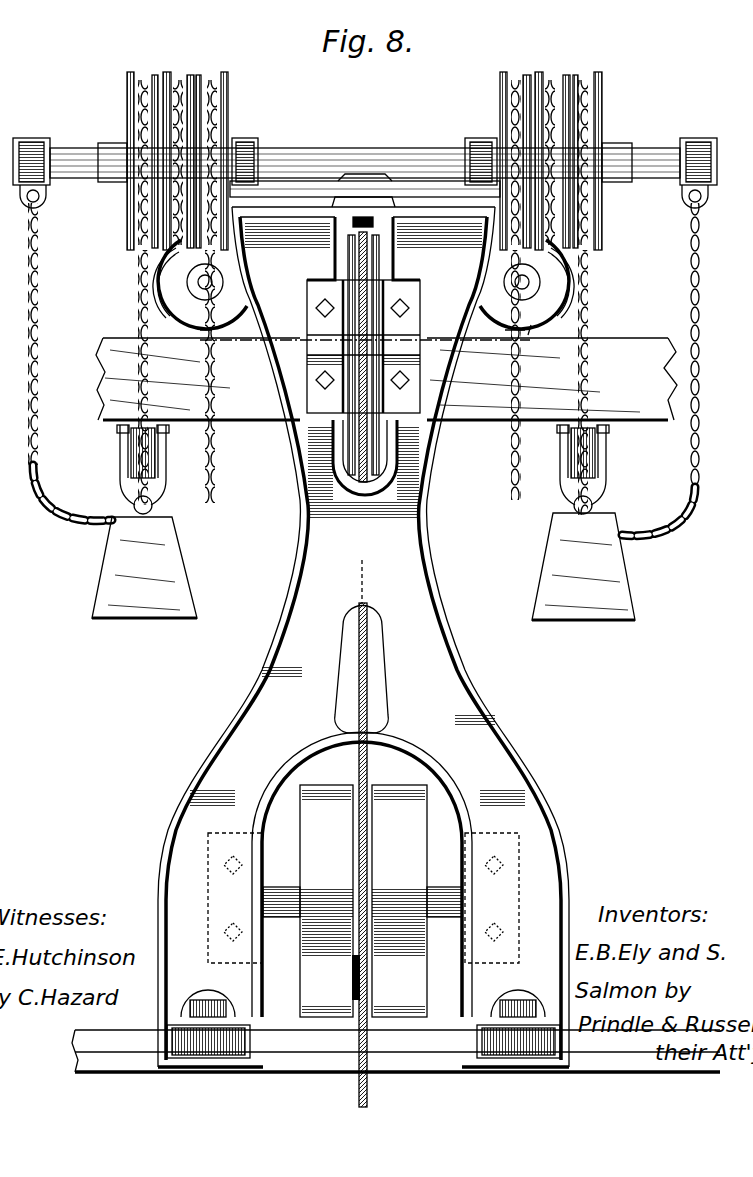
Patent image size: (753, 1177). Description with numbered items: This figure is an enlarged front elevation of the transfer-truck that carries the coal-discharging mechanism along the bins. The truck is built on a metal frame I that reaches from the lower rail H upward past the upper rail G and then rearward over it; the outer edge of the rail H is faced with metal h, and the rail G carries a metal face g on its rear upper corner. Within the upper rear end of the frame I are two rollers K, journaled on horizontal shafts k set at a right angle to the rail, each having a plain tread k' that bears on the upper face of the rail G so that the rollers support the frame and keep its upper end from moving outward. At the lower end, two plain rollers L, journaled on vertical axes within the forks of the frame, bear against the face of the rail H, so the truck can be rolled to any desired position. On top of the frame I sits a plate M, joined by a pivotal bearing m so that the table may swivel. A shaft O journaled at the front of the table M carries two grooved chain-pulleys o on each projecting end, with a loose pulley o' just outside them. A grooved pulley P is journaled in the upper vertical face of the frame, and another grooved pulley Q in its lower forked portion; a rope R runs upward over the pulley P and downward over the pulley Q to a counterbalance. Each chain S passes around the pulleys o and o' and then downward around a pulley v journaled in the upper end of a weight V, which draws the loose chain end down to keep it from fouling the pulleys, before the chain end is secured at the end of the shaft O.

The second shaft O is at (355, 163).
The grooved chain-pulleys o is at (363, 153).
The loose pulley o' is at (365, 161).
The plate M is at (298, 183).
The pivotal bearing m is at (384, 172).
The metal frame I is at (363, 637).
The grooved pulley P is at (380, 278).
The rope R is at (357, 264).
The rail G is at (386, 379).
The metal face g is at (185, 340).
The rollers K is at (363, 284).
The horizontal shafts k is at (360, 288).
The plain tread k' is at (371, 341).
The chain S is at (38, 350).
The pulley v is at (120, 453).
The weight V is at (363, 566).
The grooved pulley Q is at (340, 879).
The plain rollers L is at (207, 1062).
The metal facing h is at (396, 1051).
The second narrow rail H is at (335, 1068).